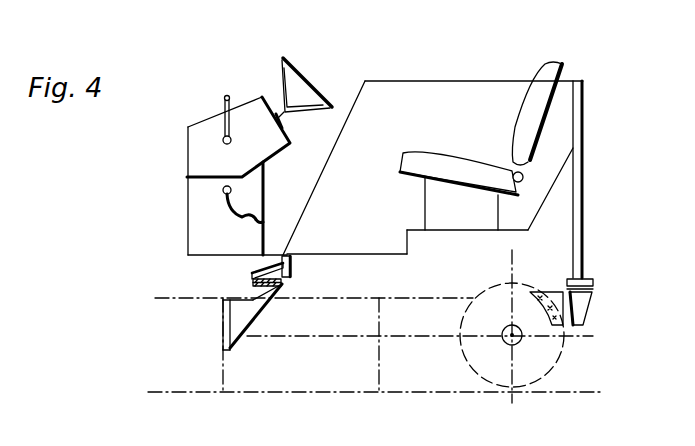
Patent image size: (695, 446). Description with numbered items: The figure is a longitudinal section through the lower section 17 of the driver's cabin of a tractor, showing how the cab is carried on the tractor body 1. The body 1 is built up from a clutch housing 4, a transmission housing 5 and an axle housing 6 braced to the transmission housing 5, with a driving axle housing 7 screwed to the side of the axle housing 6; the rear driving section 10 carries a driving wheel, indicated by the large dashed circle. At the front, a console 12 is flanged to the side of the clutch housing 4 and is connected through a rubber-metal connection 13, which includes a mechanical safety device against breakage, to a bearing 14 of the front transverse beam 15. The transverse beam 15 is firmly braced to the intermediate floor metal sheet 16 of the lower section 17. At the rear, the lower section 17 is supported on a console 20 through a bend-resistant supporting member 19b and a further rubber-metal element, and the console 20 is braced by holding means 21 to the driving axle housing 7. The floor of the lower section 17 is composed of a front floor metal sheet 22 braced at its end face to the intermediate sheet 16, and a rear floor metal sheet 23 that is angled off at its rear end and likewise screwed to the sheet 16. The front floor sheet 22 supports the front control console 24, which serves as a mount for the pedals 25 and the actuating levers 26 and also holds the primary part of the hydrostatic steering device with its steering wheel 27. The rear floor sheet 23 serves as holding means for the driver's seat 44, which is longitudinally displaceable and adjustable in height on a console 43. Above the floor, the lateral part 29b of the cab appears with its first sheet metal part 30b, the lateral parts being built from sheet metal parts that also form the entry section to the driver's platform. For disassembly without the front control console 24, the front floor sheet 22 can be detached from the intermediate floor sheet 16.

The body 1 is at (357, 287).
The clutch housing 4 is at (173, 383).
The transmission housing 5 is at (350, 377).
The axle housing 6 is at (435, 377).
The driving axle housing 7 is at (553, 362).
The rear driving section 10 is at (510, 338).
The console 12 is at (252, 307).
The rubber-metal connection 13 is at (252, 285).
The bearing 14 is at (278, 270).
The front transverse beam 15 is at (290, 255).
The intermediate floor metal sheet 16 is at (357, 252).
The lower section 17 is at (353, 66).
The bend-resistant supporting member 19b is at (577, 208).
The console 20 is at (578, 308).
The holding means 21 is at (555, 300).
The front floor metal sheet 22 is at (220, 255).
The floor metal sheet 23 is at (457, 231).
The front control console 24 is at (258, 178).
The pedal 25 is at (260, 206).
The actuating lever 26 is at (224, 98).
The steering wheel 27 is at (326, 99).
The lateral part 29b is at (513, 80).
The first sheet metal part 30b is at (417, 98).
The console 43 is at (478, 215).
The driver's seat 44 is at (447, 158).